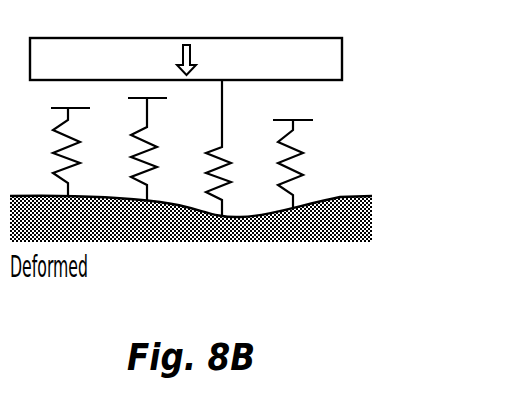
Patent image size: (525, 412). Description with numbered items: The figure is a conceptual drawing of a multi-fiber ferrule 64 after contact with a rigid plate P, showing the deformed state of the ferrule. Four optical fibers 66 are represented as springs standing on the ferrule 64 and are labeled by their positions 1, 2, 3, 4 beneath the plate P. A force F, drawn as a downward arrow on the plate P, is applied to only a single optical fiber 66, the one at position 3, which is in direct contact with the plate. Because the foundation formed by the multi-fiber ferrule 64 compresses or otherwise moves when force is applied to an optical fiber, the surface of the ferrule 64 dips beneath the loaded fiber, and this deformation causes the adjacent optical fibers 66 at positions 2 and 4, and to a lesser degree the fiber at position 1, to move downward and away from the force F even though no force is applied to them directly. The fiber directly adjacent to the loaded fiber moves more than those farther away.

The optical fiber position 1 is at (65, 146).
The optical fiber position 2 is at (142, 144).
The optical fiber position 3 is at (218, 148).
The optical fiber position 4 is at (326, 148).
The optical fibers 66 is at (304, 158).
The multi-fiber ferrule 64 is at (373, 212).
The force F is at (192, 57).
The rigid plate P is at (343, 62).